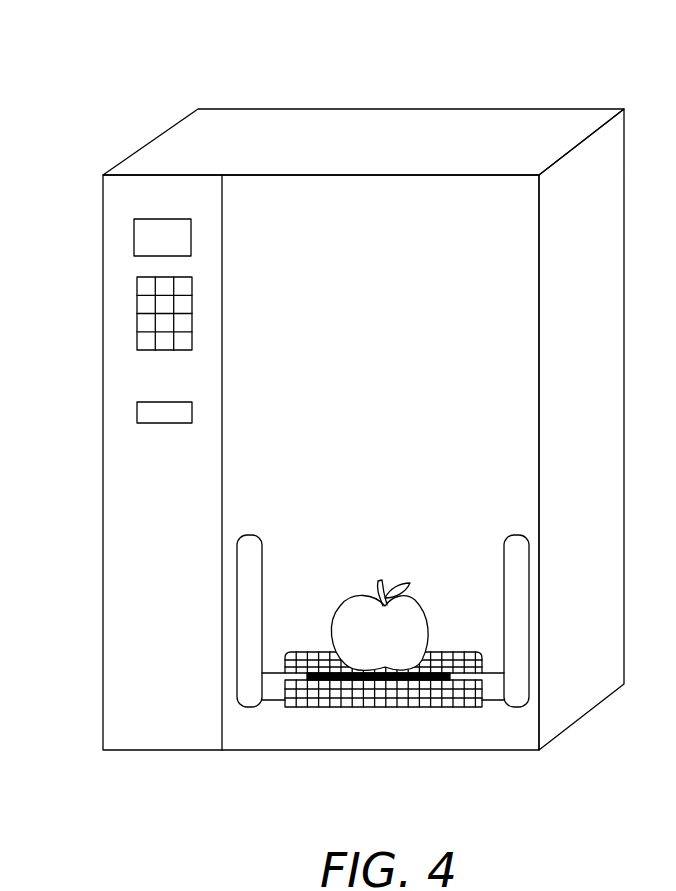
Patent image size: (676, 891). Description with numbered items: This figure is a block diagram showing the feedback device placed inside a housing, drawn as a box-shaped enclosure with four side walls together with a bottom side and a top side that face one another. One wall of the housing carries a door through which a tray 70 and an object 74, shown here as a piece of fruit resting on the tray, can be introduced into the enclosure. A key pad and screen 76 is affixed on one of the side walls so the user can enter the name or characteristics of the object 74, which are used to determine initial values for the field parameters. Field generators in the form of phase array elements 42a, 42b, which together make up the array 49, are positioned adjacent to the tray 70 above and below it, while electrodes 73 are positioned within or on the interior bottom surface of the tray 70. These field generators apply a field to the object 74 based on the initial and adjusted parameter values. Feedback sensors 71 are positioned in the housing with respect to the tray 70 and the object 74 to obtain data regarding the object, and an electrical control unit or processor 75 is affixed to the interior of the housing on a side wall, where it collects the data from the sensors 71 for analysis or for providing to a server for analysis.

The tray 70 is at (301, 90).
The key pad and screen 76 is at (137, 313).
The processor 75 is at (262, 560).
The feedback sensors 71 is at (529, 572).
The object 74 is at (425, 613).
The phase array element 42a is at (316, 665).
The phase array element 42b is at (442, 707).
The electrodes 73 is at (346, 681).
The array 49 is at (395, 707).